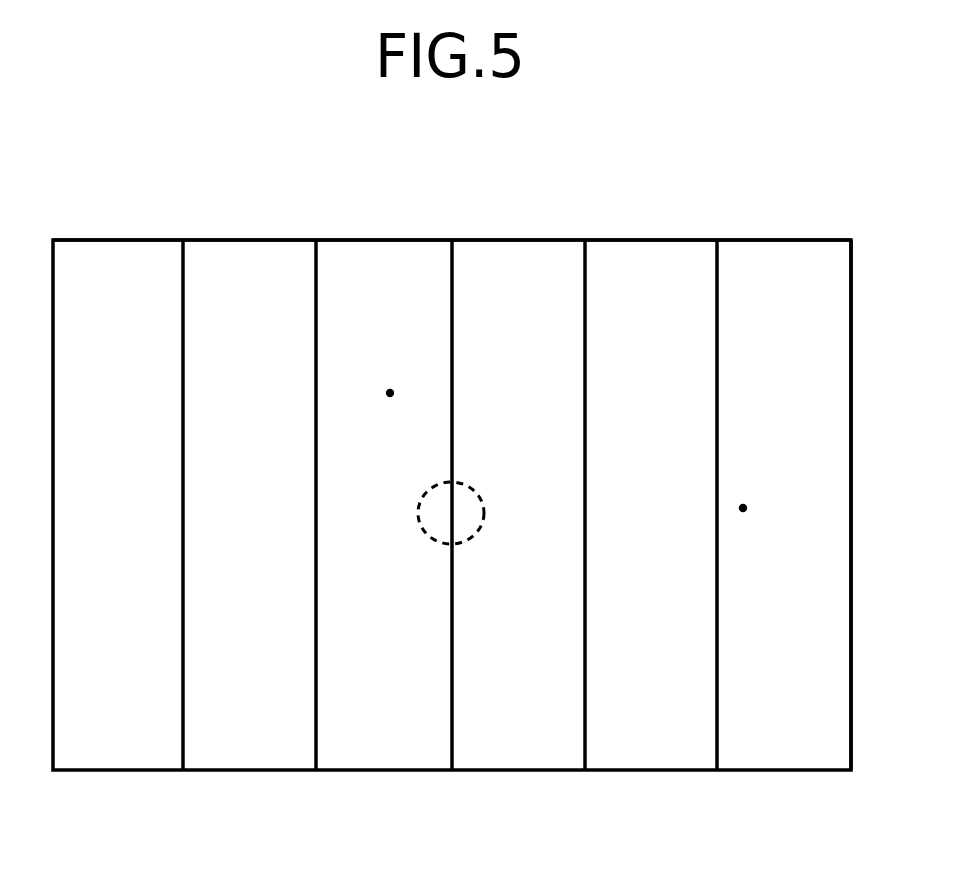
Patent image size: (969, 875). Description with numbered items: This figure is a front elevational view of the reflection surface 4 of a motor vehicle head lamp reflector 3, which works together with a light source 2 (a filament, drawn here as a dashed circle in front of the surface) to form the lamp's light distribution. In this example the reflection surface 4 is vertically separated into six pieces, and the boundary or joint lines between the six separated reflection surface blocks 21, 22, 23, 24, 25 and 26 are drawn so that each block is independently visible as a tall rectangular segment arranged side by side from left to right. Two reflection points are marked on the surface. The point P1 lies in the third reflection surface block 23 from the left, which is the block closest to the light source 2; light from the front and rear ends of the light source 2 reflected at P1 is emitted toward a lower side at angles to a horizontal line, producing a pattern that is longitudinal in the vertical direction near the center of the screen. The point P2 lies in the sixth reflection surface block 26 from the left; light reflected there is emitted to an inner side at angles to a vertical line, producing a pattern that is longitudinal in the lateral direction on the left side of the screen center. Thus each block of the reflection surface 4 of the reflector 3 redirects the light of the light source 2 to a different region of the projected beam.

The light source 2 is at (428, 538).
The reflector 3 is at (710, 214).
The reflection surface 4 is at (128, 241).
The reflection surface block 21 is at (141, 350).
The reflection surface block 22 is at (232, 350).
The reflection surface block 23 is at (367, 350).
The reflection surface block 24 is at (504, 350).
The reflection surface block 25 is at (634, 350).
The reflection surface block 26 is at (767, 350).
The reflection point P1 is at (387, 413).
The reflection point P2 is at (743, 528).